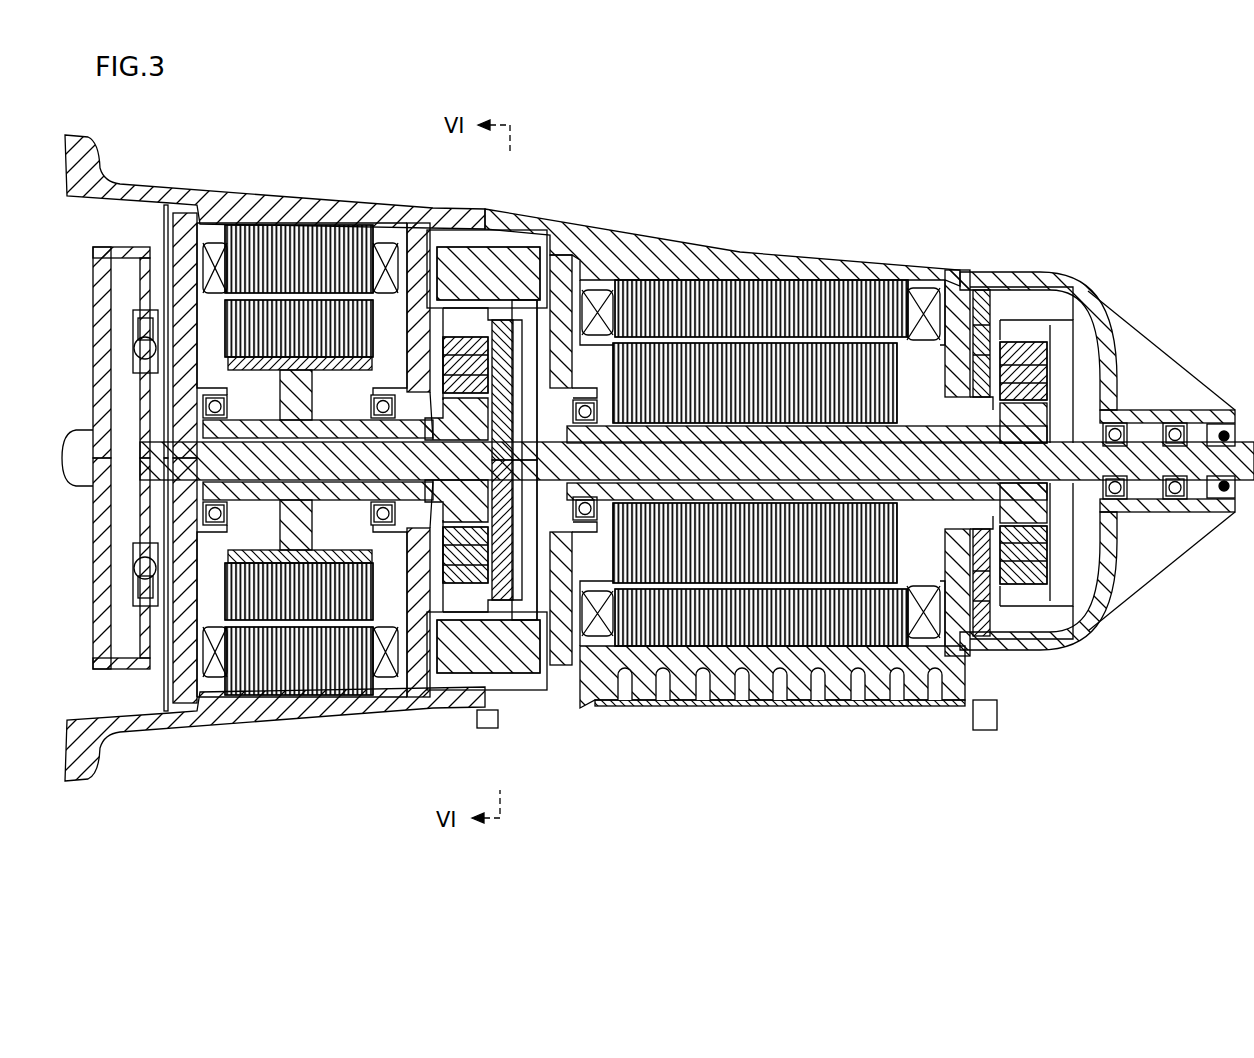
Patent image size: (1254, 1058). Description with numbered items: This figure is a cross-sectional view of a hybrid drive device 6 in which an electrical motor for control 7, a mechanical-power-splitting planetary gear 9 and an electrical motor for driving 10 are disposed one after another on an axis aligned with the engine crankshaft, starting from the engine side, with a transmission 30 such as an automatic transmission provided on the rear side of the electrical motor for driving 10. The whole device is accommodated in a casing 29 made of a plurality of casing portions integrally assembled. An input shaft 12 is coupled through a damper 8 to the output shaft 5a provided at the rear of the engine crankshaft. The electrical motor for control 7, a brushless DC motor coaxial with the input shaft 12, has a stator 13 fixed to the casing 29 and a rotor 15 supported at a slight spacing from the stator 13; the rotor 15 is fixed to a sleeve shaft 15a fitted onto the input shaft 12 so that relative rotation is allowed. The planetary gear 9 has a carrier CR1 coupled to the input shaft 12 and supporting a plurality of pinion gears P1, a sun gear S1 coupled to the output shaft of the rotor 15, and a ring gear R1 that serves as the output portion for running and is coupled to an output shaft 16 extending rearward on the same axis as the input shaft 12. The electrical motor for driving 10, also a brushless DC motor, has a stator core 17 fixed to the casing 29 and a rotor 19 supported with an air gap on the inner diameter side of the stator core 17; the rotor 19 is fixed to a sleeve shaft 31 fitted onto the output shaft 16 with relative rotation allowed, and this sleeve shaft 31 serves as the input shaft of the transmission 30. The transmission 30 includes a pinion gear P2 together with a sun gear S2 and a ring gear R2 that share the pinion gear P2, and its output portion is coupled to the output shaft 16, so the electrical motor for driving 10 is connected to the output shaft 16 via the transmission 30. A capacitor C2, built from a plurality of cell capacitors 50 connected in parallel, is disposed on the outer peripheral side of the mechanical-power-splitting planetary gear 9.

The output shaft 5a is at (84, 446).
The hybrid drive device 6 is at (363, 160).
The electrical motor for control 7 is at (247, 216).
The damper 8 is at (100, 318).
The mechanical-power-splitting planetary gear 9 is at (551, 312).
The electrical motor for driving 10 is at (770, 278).
The input shaft 12 is at (165, 205).
The stator 13 is at (248, 690).
The rotor 15 is at (295, 597).
The sleeve shaft 15a is at (353, 547).
The output shaft 16 is at (1140, 470).
The stator core 17 is at (742, 640).
The rotor 19 is at (781, 545).
The casing 29 is at (152, 735).
The transmission 30 is at (1064, 256).
The sleeve shaft 31 is at (826, 500).
The capacitor C2 is at (490, 272).
The cell capacitors 50 is at (488, 460).
The pinion gears P1 is at (500, 497).
The ring gear R1 is at (460, 605).
The sun gear S1 is at (483, 513).
The carrier CR1 is at (460, 507).
The pinion gear P2 is at (1038, 550).
The ring gear R2 is at (1022, 620).
The sun gear S2 is at (1025, 545).